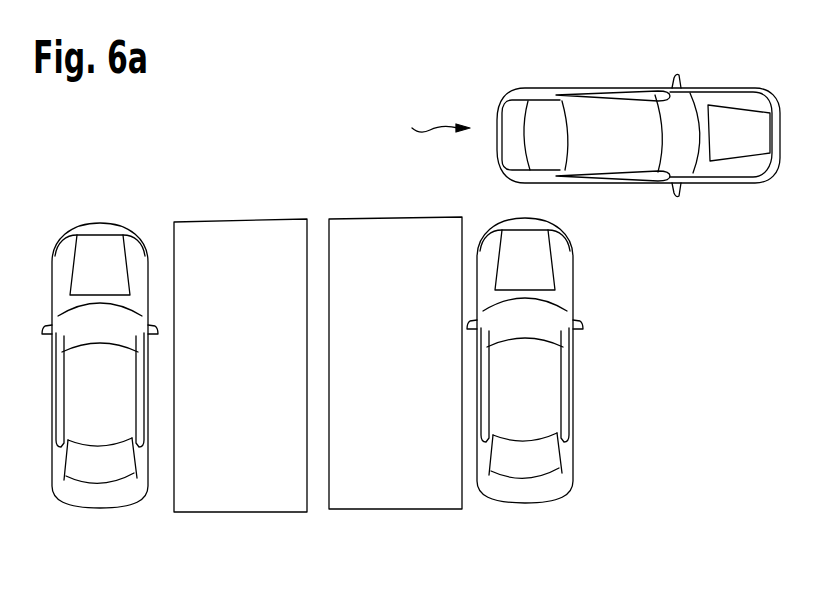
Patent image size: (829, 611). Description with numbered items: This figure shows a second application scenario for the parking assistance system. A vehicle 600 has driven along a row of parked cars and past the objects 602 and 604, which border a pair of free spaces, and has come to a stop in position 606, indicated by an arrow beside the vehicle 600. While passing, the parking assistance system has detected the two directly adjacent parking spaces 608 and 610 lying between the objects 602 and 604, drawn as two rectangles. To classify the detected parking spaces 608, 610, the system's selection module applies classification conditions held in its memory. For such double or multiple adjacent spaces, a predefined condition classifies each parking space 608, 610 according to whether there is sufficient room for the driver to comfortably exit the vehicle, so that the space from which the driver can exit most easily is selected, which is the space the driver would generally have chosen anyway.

The vehicle 600 is at (551, 95).
The object 602 is at (100, 503).
The object 604 is at (528, 495).
The position 606 is at (420, 124).
The parking space 608 is at (242, 498).
The parking space 610 is at (412, 498).